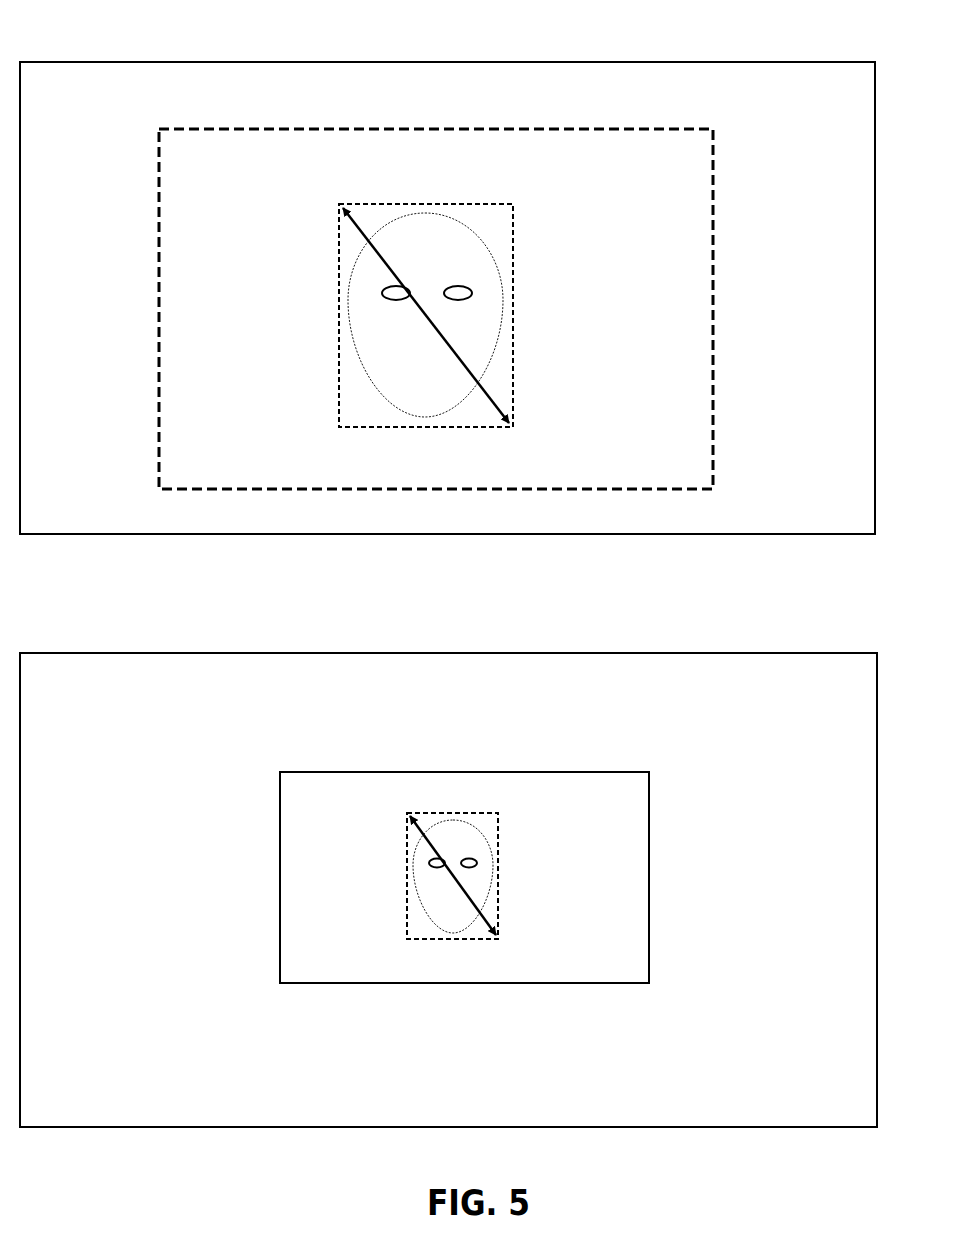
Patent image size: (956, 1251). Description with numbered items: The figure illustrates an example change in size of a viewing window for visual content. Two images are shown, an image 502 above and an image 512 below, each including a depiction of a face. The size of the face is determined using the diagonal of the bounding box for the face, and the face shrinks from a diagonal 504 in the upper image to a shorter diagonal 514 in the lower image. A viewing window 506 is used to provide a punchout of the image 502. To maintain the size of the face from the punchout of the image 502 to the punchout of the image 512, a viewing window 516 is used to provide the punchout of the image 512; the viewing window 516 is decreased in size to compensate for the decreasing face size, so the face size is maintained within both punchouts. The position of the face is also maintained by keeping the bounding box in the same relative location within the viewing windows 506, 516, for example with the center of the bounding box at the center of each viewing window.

The image 502 is at (118, 53).
The diagonal 504 is at (487, 397).
The viewing window 506 is at (433, 128).
The image 512 is at (118, 645).
The diagonal 514 is at (477, 907).
The viewing window 516 is at (460, 770).